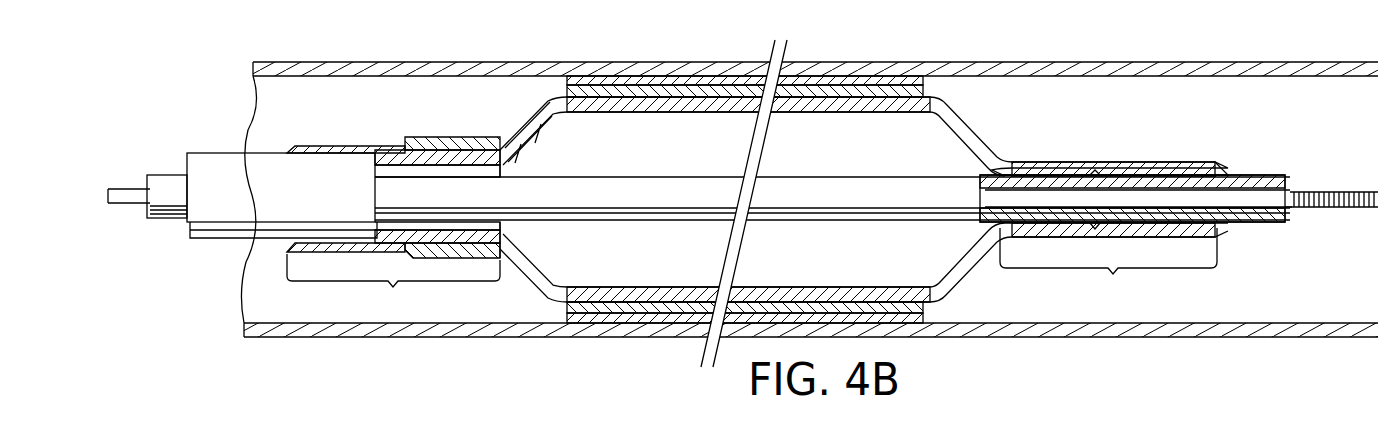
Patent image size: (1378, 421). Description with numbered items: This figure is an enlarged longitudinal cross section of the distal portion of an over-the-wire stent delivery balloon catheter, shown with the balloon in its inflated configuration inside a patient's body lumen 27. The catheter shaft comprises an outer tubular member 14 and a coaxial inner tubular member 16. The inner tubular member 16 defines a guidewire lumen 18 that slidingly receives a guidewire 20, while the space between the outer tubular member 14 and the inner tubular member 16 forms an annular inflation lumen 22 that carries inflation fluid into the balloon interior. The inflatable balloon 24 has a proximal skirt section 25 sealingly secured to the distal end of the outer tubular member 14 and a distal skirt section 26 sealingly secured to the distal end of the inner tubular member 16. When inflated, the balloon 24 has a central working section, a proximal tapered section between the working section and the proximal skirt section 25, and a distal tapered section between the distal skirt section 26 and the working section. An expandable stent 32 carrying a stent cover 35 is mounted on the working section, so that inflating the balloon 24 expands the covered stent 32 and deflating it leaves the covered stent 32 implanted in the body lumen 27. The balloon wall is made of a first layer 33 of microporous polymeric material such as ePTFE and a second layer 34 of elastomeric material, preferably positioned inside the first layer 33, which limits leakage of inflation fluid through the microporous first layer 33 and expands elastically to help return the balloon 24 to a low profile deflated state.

The outer tubular member 14 is at (227, 168).
The inner tubular member 16 is at (165, 177).
The guidewire lumen 18 is at (1288, 209).
The guidewire 20 is at (140, 200).
The inflation lumen 22 is at (398, 170).
The inflatable balloon 24 is at (977, 123).
The proximal skirt section 25 is at (393, 226).
The distal skirt section 26 is at (1108, 269).
The body lumen 27 is at (1208, 131).
The expandable stent 32 is at (820, 88).
The first layer 33 is at (525, 115).
The second layer 34 is at (533, 133).
The stent cover 35 is at (890, 78).